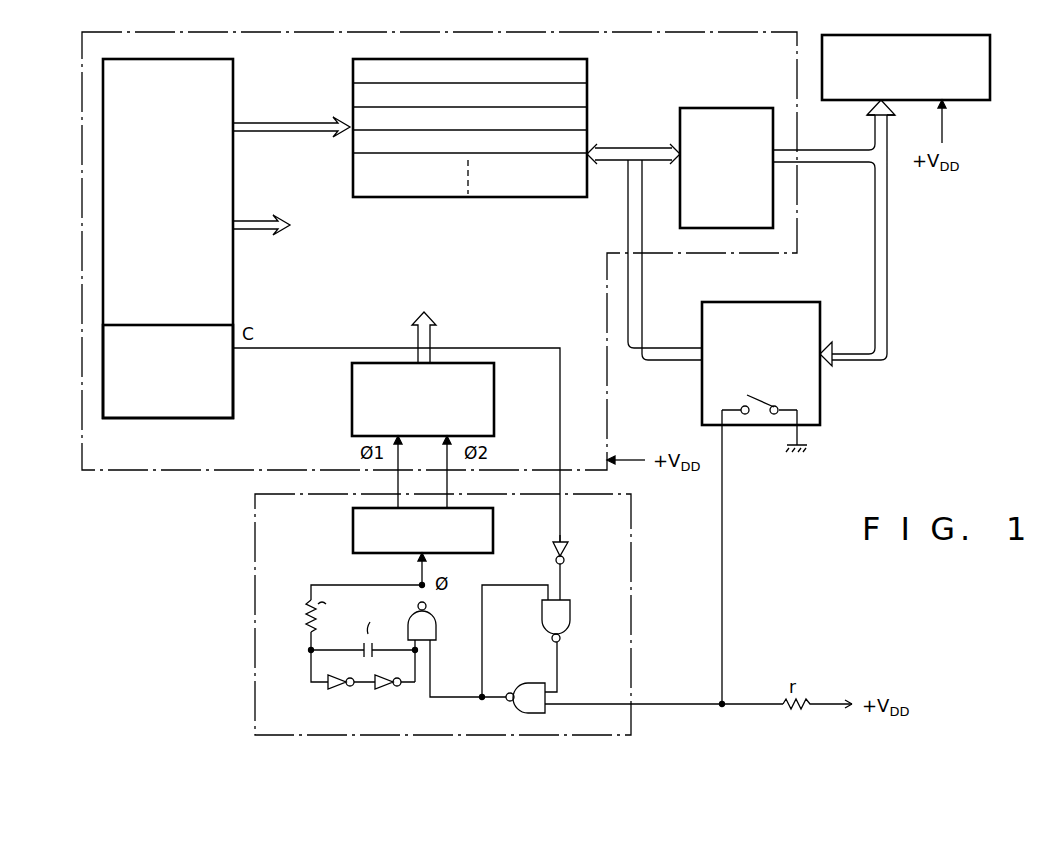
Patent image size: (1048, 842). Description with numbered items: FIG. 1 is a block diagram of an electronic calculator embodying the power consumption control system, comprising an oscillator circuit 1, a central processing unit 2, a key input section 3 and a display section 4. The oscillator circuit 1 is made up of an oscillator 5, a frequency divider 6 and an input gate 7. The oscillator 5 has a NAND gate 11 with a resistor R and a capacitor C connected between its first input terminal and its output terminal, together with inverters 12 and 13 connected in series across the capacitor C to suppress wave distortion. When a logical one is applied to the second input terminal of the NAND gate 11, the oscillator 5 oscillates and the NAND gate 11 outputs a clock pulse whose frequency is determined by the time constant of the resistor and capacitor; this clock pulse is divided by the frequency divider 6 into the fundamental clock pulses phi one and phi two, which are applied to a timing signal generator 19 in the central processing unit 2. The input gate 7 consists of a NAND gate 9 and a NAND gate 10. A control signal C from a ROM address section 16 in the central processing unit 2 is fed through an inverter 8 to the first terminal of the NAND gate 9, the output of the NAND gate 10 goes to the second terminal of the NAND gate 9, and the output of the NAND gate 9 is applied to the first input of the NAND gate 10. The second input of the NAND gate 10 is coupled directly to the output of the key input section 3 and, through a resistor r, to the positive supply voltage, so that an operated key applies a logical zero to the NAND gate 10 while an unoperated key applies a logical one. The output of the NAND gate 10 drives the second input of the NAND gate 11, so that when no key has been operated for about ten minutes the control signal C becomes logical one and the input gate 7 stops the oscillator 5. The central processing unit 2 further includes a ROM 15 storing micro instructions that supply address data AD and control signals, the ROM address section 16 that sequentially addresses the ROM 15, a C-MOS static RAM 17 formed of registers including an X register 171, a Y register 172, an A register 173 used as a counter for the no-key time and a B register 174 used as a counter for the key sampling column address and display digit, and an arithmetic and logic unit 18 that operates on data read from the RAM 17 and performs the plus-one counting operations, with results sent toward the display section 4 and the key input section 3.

The oscillator circuit 1 is at (632, 638).
The central processing unit 2 is at (799, 232).
The key input section 3 is at (812, 318).
The display section 4 is at (846, 100).
The oscillator 5 is at (406, 641).
The frequency divider 6 is at (496, 522).
The input gate 7 is at (632, 617).
The inverter 8 is at (567, 549).
The NAND gate 9 is at (571, 624).
The NAND gate 10 is at (518, 684).
The NAND gate 11 is at (437, 628).
The inverter 12 is at (339, 694).
The inverter 13 is at (389, 694).
The ROM 15 is at (228, 76).
The ROM address section 16 is at (214, 418).
The RAM 17 is at (497, 150).
The arithmetic and logic unit 18 is at (752, 110).
The timing signal generator 19 is at (490, 380).
The X register 171 is at (583, 72).
The Y register 172 is at (583, 98).
The A register 173 is at (583, 122).
The B register 174 is at (574, 147).